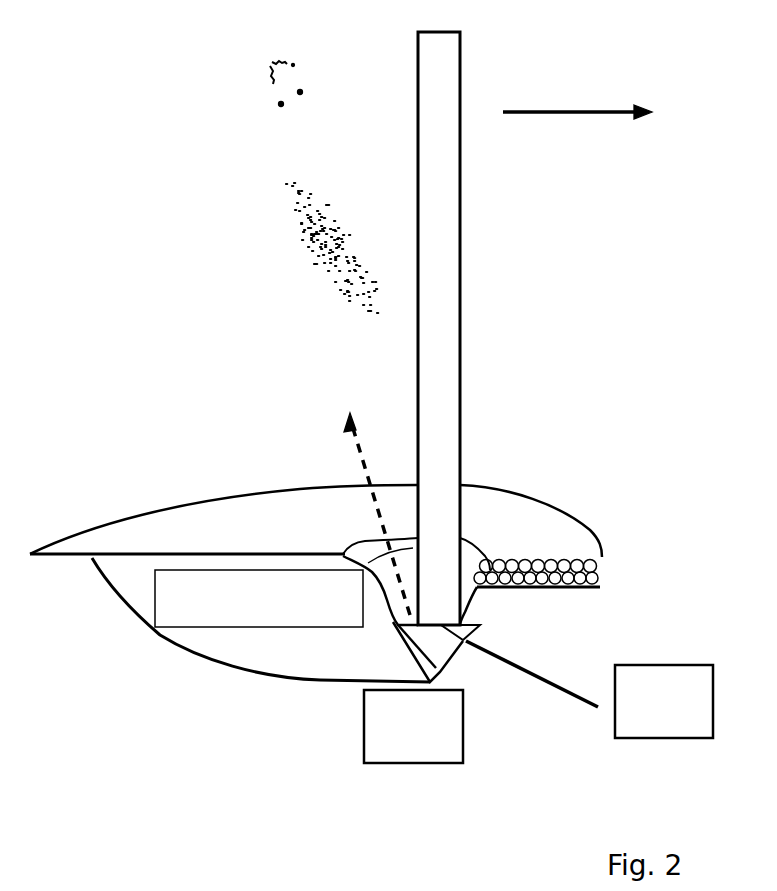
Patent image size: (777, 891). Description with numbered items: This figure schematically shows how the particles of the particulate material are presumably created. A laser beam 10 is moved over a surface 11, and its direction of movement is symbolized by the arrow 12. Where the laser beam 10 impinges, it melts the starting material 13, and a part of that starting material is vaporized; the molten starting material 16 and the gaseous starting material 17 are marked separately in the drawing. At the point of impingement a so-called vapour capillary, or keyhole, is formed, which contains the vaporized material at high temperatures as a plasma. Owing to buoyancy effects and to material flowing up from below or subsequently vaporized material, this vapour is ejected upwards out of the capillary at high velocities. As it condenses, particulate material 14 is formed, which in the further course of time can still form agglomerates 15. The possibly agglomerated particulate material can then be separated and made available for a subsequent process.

The laser beam 10 is at (442, 260).
The surface 11 is at (227, 523).
The arrow 12 is at (540, 108).
The starting material 13 is at (548, 600).
The particulate material 14 is at (292, 228).
The agglomerates 15 is at (253, 92).
The molten starting material 16 is at (185, 606).
The gaseous starting material 17 is at (577, 681).